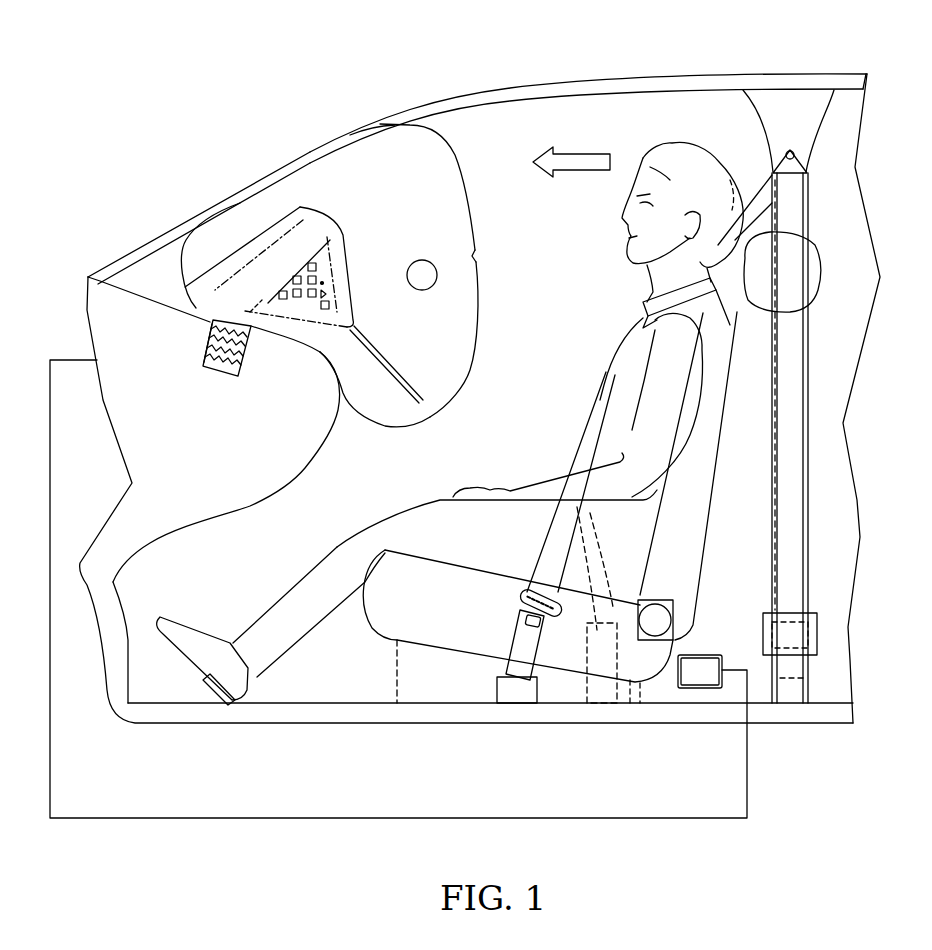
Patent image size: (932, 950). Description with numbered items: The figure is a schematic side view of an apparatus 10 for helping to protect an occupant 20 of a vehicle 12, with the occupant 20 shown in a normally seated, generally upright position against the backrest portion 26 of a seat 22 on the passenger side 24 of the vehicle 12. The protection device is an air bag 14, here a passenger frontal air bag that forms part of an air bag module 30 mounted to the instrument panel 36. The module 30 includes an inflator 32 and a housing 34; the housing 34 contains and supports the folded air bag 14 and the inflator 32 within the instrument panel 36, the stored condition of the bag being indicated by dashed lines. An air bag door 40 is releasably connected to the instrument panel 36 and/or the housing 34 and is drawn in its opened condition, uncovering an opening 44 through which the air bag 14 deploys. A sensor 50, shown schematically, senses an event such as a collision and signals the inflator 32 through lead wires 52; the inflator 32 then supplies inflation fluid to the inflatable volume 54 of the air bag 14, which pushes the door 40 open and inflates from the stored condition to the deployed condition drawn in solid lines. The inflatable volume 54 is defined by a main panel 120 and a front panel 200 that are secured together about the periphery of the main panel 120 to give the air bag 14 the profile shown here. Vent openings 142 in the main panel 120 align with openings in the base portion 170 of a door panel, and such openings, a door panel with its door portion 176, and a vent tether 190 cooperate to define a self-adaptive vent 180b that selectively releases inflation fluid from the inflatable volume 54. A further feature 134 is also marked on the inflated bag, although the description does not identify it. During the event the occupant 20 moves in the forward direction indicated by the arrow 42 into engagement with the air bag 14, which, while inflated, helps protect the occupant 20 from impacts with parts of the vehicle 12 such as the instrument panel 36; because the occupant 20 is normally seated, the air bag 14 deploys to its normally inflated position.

The apparatus 10 is at (117, 238).
The vehicle 12 is at (121, 185).
The air bag 14 is at (388, 319).
The occupant 20 is at (713, 178).
The seat 22 is at (750, 379).
The passenger side 24 is at (500, 135).
The backrest portion 26 is at (730, 462).
The air bag module 30 is at (187, 334).
The inflator 32 is at (208, 370).
The housing 34 is at (238, 380).
The instrument panel 36 is at (268, 487).
The air bag door 40 is at (190, 305).
The arrow 42 is at (594, 147).
The opening 44 is at (250, 312).
The sensor 50 is at (696, 688).
The lead wires 52 is at (207, 821).
The inflatable volume 54 is at (377, 164).
The main panel 120 is at (360, 302).
The vent 134 is at (453, 296).
The vent openings 142 is at (280, 389).
The base portion 170 is at (316, 327).
The door portion 176 is at (304, 284).
The self-adaptive vent 180b is at (313, 194).
The vent tether 190 is at (388, 397).
The front panel 200 is at (481, 268).